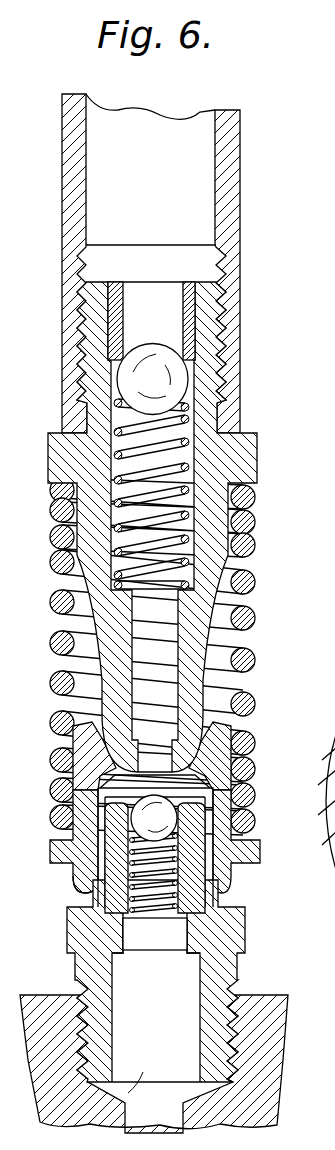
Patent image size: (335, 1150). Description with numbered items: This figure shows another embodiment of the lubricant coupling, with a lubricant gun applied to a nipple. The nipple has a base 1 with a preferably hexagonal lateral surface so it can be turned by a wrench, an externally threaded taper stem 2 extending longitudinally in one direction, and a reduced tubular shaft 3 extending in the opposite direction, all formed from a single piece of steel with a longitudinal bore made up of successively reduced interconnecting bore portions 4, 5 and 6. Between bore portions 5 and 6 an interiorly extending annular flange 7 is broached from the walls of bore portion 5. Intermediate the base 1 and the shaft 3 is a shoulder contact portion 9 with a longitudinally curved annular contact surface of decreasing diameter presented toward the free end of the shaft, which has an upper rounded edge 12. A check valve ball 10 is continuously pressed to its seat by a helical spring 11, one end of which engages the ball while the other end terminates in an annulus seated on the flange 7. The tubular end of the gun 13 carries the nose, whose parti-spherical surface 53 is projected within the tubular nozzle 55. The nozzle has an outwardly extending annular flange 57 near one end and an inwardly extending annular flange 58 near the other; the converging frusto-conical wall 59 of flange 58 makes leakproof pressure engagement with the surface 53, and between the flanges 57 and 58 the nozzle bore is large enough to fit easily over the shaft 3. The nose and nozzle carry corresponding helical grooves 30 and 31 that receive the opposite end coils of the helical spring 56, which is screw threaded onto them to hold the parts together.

The base of a nipple 1 is at (233, 951).
The externally threaded taper stem 2 is at (80, 983).
The reduced tubular shaft 3 is at (118, 850).
The bore portion 4 is at (100, 882).
The bore portion 5 is at (187, 937).
The bore portion 6 is at (155, 898).
The interiorly extending flange 7 is at (173, 914).
The shoulder contact portion 9 is at (81, 896).
The check valve ball 10 is at (143, 818).
The helical spring 11 is at (180, 886).
The upper rounded edge 12 is at (100, 791).
The tubular end of the gun 13 is at (68, 211).
The helically grooved outer surface of the nozzle 30 is at (251, 790).
The helically grooved outer surface of the nipple 31 is at (253, 545).
The parti-spherical surface 53 is at (140, 752).
The tubular nozzle 55 is at (90, 833).
The helical spring 56 is at (62, 653).
The outwardly extending annular flange 57 is at (250, 845).
The inwardly extending annular flange 58 is at (110, 778).
The frusto-conical wall 59 is at (97, 730).